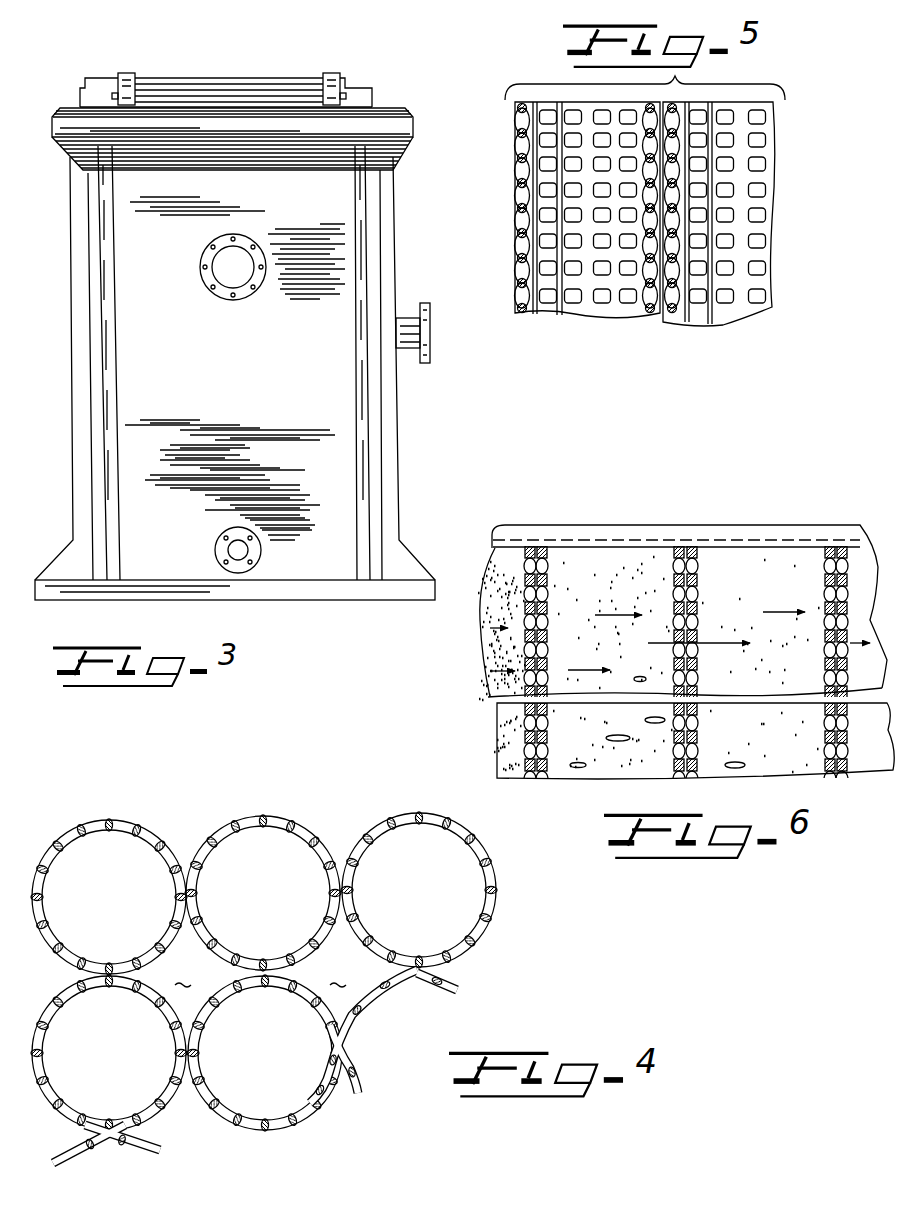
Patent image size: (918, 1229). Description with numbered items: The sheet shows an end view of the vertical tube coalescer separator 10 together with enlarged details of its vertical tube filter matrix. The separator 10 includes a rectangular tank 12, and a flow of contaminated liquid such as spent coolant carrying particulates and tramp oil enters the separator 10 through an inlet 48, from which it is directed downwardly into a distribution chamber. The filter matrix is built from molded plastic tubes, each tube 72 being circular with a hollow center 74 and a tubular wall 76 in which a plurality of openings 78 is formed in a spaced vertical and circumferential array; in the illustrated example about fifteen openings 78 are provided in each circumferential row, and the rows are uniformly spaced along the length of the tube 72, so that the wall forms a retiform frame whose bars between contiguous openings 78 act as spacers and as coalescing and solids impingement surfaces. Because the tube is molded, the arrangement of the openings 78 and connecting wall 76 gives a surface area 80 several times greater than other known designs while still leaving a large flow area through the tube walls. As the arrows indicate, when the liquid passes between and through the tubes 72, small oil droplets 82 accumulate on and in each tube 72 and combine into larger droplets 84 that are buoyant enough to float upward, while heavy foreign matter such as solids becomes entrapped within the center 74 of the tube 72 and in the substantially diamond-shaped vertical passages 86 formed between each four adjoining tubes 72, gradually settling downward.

In FIG. 3, the vertical tube coalescer separator 10 is at (235, 318).
In FIG. 3, the rectangular tank 12 is at (392, 108).
In FIG. 5, the rectangular tank 12 is at (641, 224).
In FIG. 3, the inlet 48 is at (243, 297).
In FIG. 6, the tube 72 is at (531, 540).
In FIG. 4, the tube 72 is at (264, 970).
In FIG. 6, the hollow center 74 is at (790, 555).
In FIG. 4, the hollow center 74 is at (112, 906).
In FIG. 5, the tubular wall 76 is at (521, 148).
In FIG. 6, the tubular wall 76 is at (525, 580).
In FIG. 4, the tubular wall 76 is at (240, 822).
In FIG. 5, the openings 78 is at (758, 117).
In FIG. 6, the openings 78 is at (676, 565).
In FIG. 5, the surface area 80 is at (585, 118).
In FIG. 6, the oil droplets 82 is at (520, 732).
In FIG. 6, the larger droplets 84 is at (616, 560).
In FIG. 4, the diamond-shaped vertical passages 86 is at (262, 973).